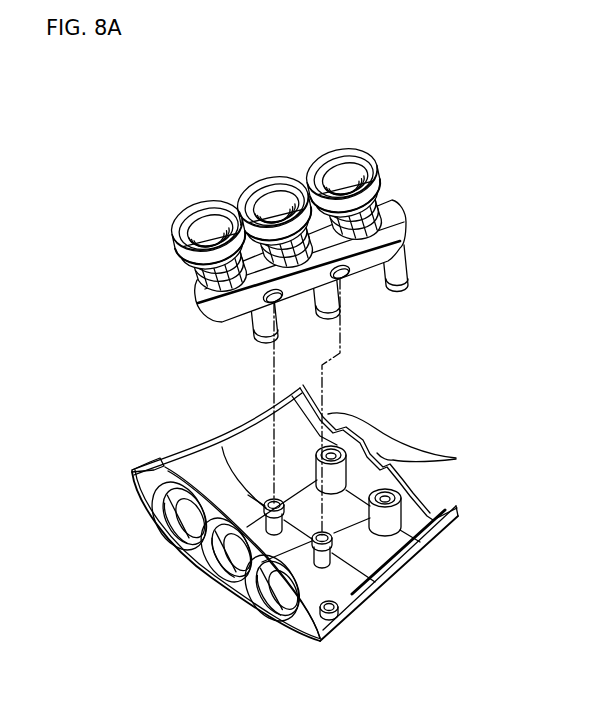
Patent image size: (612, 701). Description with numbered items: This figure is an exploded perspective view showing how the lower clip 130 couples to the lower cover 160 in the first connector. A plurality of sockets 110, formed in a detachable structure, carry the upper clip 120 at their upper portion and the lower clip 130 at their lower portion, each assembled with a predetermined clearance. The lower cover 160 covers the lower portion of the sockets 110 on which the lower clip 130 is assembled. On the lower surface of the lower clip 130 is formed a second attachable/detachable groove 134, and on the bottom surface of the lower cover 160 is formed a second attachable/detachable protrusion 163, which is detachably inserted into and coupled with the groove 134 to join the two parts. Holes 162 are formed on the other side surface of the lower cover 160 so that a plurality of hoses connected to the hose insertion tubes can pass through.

The sockets 110 is at (373, 148).
The upper clip 120 is at (390, 204).
The lower clip 130 is at (403, 250).
The second attachable/detachable groove 134 is at (277, 298).
The lower cover 160 is at (383, 420).
The holes 162 is at (425, 497).
The second attachable/detachable protrusion 163 is at (388, 556).